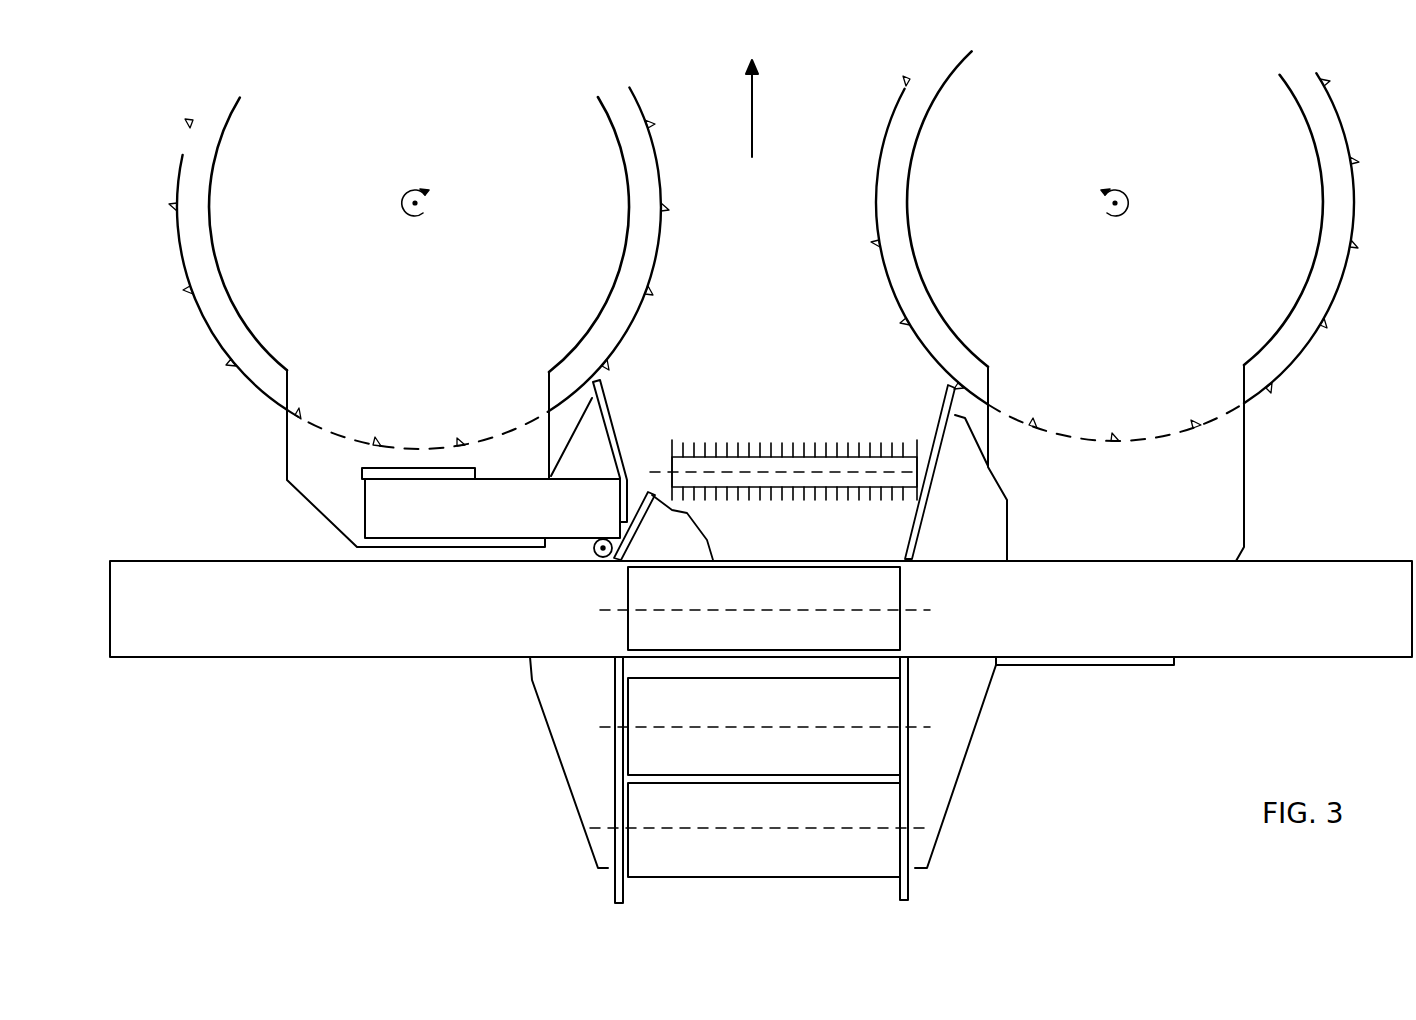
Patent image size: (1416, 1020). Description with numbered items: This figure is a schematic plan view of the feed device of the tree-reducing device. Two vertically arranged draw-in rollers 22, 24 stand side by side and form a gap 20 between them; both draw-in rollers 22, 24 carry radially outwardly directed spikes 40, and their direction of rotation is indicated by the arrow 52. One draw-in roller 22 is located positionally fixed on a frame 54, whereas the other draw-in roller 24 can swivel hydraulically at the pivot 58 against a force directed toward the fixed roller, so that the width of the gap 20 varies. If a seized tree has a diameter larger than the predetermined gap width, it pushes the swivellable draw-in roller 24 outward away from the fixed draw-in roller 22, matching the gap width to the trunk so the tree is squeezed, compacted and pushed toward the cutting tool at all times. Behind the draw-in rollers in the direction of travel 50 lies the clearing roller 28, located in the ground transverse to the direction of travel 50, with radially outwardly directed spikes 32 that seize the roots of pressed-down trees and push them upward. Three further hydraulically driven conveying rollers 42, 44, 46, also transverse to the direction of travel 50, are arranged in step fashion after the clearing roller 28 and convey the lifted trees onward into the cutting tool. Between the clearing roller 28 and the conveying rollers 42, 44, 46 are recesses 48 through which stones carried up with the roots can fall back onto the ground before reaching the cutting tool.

The gap 20 is at (768, 252).
The draw-in roller 22 is at (1326, 318).
The draw-in roller 24 is at (240, 368).
The clearing roller 28 is at (760, 452).
The spikes 32 is at (672, 447).
The spikes 40 is at (184, 262).
The conveying roller 42 is at (890, 593).
The conveying roller 44 is at (882, 752).
The conveying roller 46 is at (882, 852).
The recesses 48 is at (884, 535).
The direction of travel 50 is at (757, 107).
The arrow 52 is at (404, 220).
The frame 54 is at (287, 480).
The pivot 58 is at (593, 553).